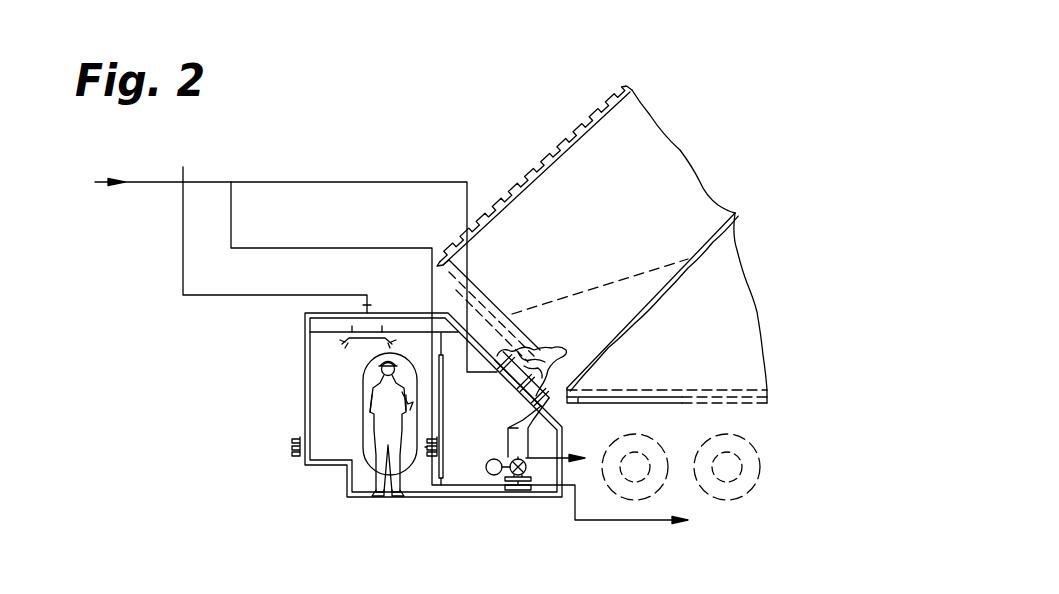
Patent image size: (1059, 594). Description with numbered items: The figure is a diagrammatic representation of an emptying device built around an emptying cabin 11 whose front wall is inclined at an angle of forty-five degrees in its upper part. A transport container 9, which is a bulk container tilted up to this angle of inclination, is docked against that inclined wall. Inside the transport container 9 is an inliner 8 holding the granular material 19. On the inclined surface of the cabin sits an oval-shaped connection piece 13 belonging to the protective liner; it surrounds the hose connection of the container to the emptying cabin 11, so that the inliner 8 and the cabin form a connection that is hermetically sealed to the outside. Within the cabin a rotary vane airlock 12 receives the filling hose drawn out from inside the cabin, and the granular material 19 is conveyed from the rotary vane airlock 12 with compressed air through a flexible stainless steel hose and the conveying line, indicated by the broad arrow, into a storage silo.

The inliner 8 is at (625, 318).
The transport container 9 is at (692, 266).
The emptying cabin 11 is at (305, 386).
The rotary vane airlock 12 is at (536, 490).
The connection piece 13 is at (535, 372).
The granular material 19 is at (657, 268).